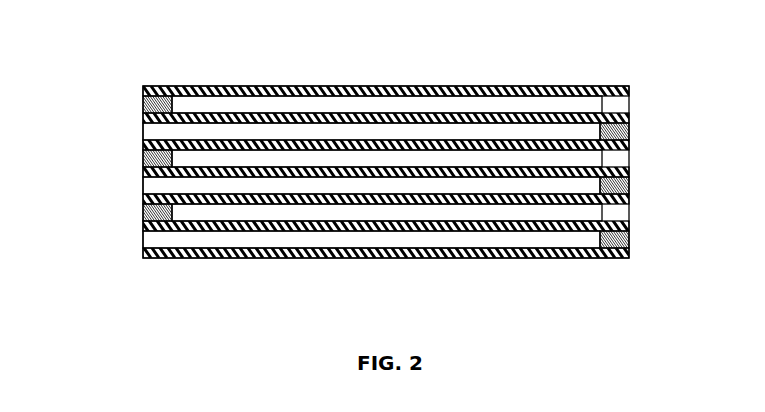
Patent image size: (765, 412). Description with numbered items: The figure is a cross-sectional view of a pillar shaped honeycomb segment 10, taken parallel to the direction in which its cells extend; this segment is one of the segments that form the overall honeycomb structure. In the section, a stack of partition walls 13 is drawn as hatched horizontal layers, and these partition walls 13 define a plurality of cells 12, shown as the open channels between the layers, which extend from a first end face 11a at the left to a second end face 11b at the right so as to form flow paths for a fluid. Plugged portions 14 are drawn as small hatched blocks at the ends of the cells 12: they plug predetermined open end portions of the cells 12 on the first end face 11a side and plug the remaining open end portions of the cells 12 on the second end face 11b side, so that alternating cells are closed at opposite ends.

The pillar shaped honeycomb segment 10 is at (410, 317).
The first end face 11a is at (143, 170).
The second end face 11b is at (629, 170).
The cells 12 is at (617, 108).
The partition walls 13 is at (390, 87).
The plugged portions 14 is at (628, 232).